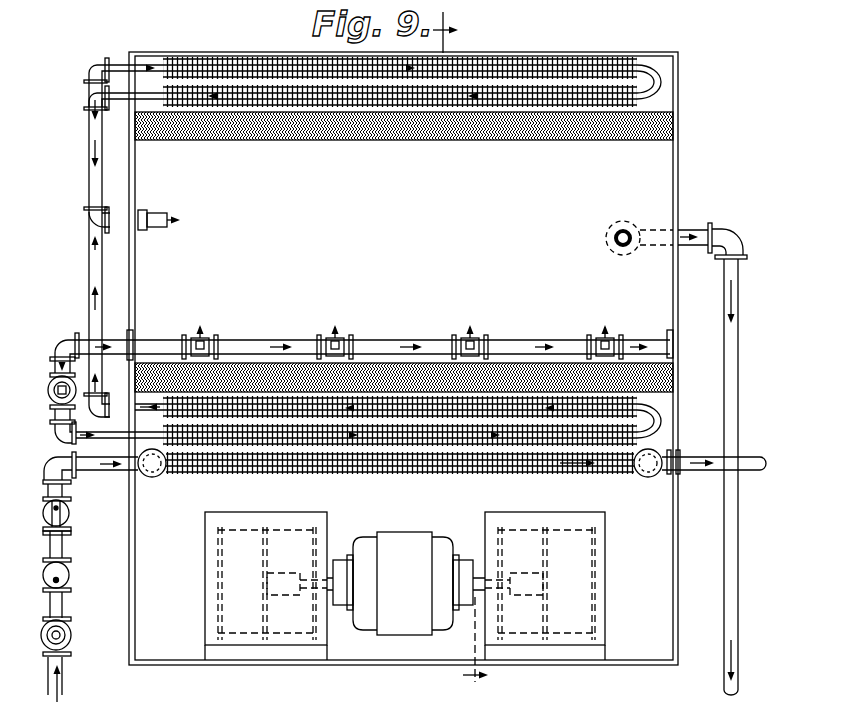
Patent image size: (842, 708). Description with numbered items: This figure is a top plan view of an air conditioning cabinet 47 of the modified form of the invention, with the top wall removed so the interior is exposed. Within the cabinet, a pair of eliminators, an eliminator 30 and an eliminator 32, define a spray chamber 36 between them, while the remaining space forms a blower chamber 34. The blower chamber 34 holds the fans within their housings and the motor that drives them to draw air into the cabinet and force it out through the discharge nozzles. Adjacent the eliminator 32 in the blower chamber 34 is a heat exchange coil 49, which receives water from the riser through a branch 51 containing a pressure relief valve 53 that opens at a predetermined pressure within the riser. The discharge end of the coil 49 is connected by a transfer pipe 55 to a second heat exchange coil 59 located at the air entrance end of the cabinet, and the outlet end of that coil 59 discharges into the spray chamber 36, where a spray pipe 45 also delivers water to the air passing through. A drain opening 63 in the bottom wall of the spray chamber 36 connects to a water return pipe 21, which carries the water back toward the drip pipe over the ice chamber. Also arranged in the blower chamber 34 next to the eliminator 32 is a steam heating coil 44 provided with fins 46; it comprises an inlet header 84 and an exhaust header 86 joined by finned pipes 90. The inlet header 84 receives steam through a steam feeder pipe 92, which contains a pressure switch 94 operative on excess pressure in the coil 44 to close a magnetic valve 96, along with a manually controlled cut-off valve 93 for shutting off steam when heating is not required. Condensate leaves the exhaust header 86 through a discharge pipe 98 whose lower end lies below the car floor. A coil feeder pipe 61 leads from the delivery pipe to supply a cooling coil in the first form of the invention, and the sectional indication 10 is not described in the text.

The section line 10 is at (460, 354).
The water return pipe 21 is at (740, 362).
The upper filter/pad 30 is at (512, 135).
The eliminator 32 is at (368, 364).
The blower chamber 34 is at (406, 560).
The spray chamber 36 is at (404, 358).
The heating coil 44 is at (200, 470).
The spray pipe 45 is at (262, 344).
The fins 46 is at (270, 473).
The air conditioning cabinet 47 is at (668, 666).
The heat exchange coil 49 is at (500, 412).
The branch 51 is at (52, 426).
The pressure relief valve 53 is at (48, 391).
The transfer pipe 55 is at (89, 279).
The heat exchange coil 59 is at (158, 64).
The coil feeder pipe 61 is at (88, 182).
The drain opening 63 is at (620, 230).
The inlet header 84 is at (160, 476).
The exhaust header 86 is at (648, 477).
The finned pipes 90 is at (570, 472).
The steam feeder pipe 92 is at (64, 681).
The cut-off valve 93 is at (72, 636).
The pressure switch 94 is at (70, 513).
The magnetic valve 96 is at (70, 575).
The discharge pipe 98 is at (714, 476).